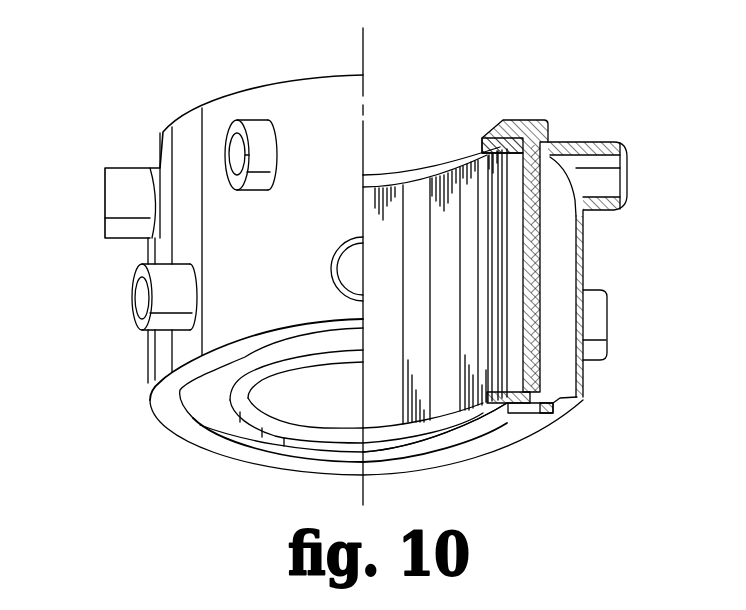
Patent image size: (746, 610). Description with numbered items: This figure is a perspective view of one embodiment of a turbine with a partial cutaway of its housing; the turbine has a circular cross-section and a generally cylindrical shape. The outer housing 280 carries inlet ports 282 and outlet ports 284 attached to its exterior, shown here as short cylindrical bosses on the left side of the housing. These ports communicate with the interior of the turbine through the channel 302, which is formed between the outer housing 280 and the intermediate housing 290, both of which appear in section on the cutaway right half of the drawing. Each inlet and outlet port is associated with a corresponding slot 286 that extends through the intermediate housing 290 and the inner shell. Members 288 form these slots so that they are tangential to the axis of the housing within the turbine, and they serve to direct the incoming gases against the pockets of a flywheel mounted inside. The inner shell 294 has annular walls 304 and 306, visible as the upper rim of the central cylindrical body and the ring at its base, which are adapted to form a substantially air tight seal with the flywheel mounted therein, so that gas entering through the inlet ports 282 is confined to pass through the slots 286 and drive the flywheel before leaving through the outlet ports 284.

The outer housing 280 is at (312, 98).
The inlet ports 282 is at (250, 127).
The outlet ports 284 is at (133, 315).
The slot 286 is at (498, 148).
The members 288 is at (500, 403).
The intermediate housing 290 is at (527, 125).
The inner shell 294 is at (488, 132).
The channel 302 is at (562, 238).
The annular wall 304 is at (384, 173).
The annular wall 306 is at (302, 443).